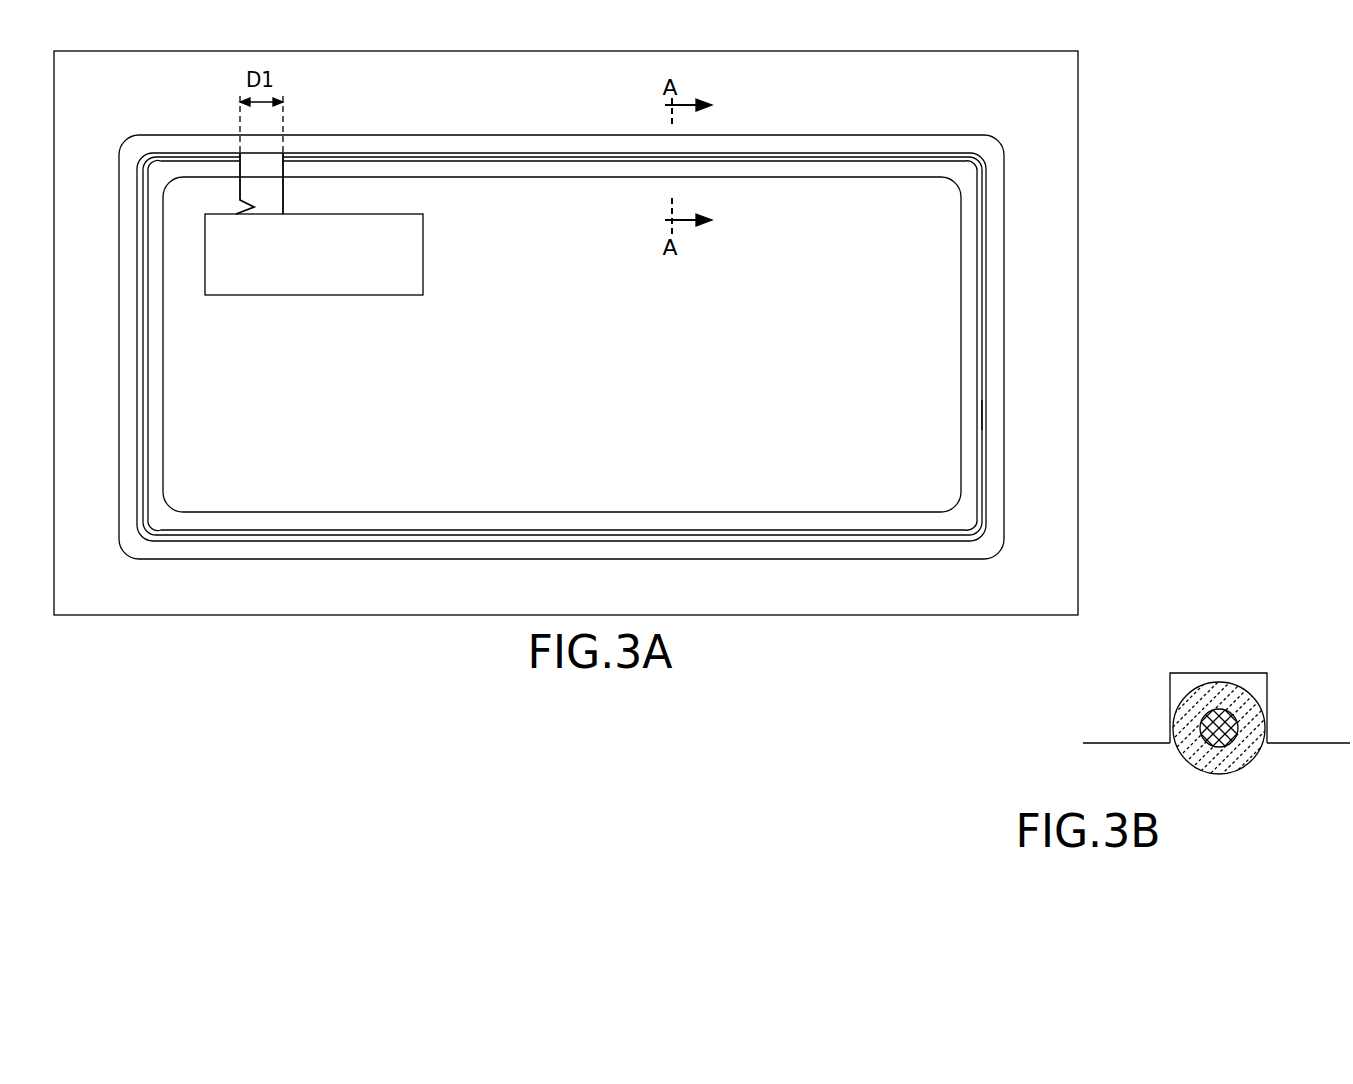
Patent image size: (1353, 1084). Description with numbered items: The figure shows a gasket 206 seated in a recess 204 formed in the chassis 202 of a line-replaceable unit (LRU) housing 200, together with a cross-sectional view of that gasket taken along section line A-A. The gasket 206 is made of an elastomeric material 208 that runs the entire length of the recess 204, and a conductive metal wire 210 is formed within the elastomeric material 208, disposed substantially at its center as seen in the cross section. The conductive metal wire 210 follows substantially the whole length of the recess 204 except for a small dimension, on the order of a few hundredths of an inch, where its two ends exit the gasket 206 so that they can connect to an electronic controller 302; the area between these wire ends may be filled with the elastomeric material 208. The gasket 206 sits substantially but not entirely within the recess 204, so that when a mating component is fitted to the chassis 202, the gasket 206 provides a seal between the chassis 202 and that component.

In FIG. 3A, the line-replaceable unit (LRU) housing 200 is at (1097, 135).
In FIG. 3A, the chassis 202 is at (483, 107).
In FIG. 3B, the chassis 202 is at (1097, 729).
In FIG. 3A, the recess 204 is at (1004, 210).
In FIG. 3B, the recess 204 is at (1172, 673).
In FIG. 3A, the gasket 206 is at (990, 355).
In FIG. 3B, the gasket 206 is at (1268, 720).
In FIG. 3A, the elastomeric material 208 is at (986, 300).
In FIG. 3B, the elastomeric material 208 is at (1222, 695).
In FIG. 3A, the conductive metal wire 210 is at (982, 423).
In FIG. 3B, the conductive metal wire 210 is at (1230, 743).
In FIG. 3A, the electronic controller 302 is at (423, 282).